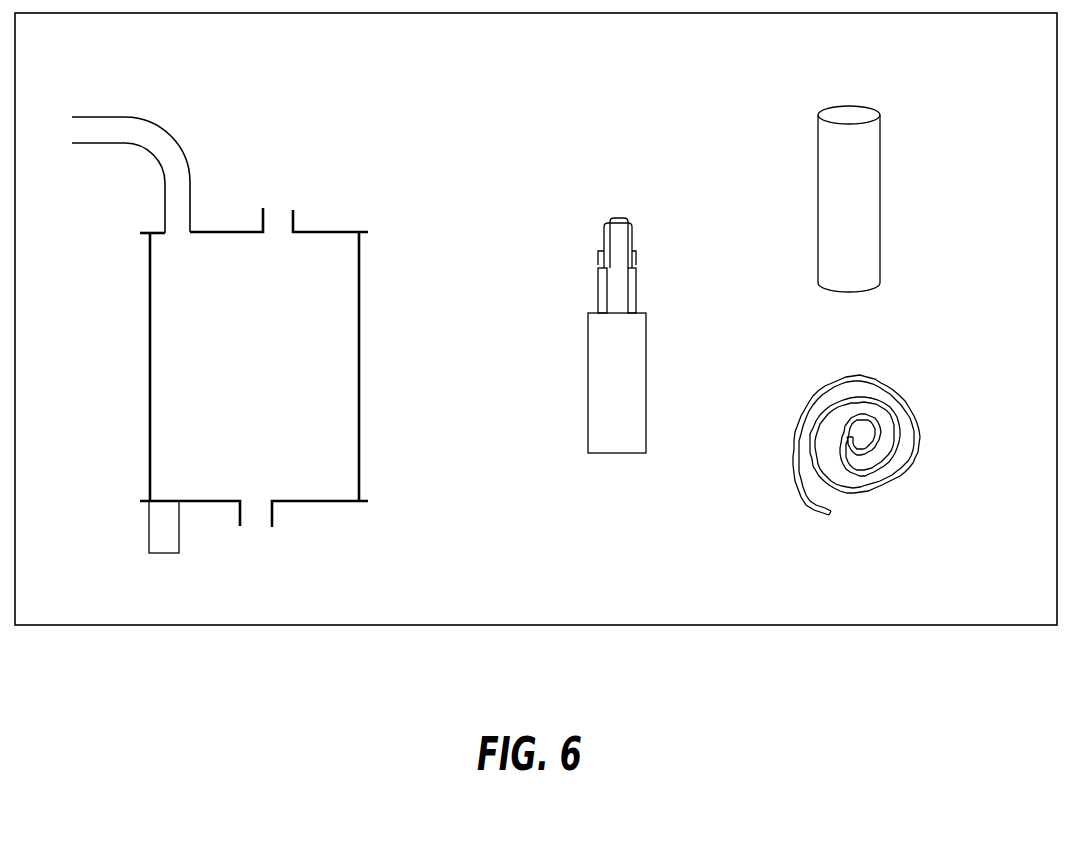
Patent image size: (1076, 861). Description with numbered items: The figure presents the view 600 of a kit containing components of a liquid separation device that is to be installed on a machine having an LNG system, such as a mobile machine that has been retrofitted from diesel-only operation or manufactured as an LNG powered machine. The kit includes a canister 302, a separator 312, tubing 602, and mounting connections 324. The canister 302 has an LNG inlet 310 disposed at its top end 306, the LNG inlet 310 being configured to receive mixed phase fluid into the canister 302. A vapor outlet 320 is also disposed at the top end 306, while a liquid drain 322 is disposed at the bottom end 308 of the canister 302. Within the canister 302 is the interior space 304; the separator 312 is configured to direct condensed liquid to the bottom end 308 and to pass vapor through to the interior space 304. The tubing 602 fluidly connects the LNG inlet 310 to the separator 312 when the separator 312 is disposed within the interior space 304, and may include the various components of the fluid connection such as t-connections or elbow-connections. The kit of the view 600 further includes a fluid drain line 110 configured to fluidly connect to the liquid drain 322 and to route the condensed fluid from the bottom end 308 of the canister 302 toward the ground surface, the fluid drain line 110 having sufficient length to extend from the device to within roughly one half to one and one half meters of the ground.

The view 600 is at (1037, 57).
The canister 302 is at (360, 368).
The interior space 304 is at (214, 460).
The top end 306 is at (358, 232).
The bottom end 308 is at (342, 503).
The LNG inlet 310 is at (295, 222).
The separator 312 is at (646, 383).
The vapor outlet 320 is at (168, 133).
The liquid drain 322 is at (273, 510).
The mounting connections 324 is at (149, 528).
The tubing 602 is at (880, 197).
The fluid drain line 110 is at (918, 438).